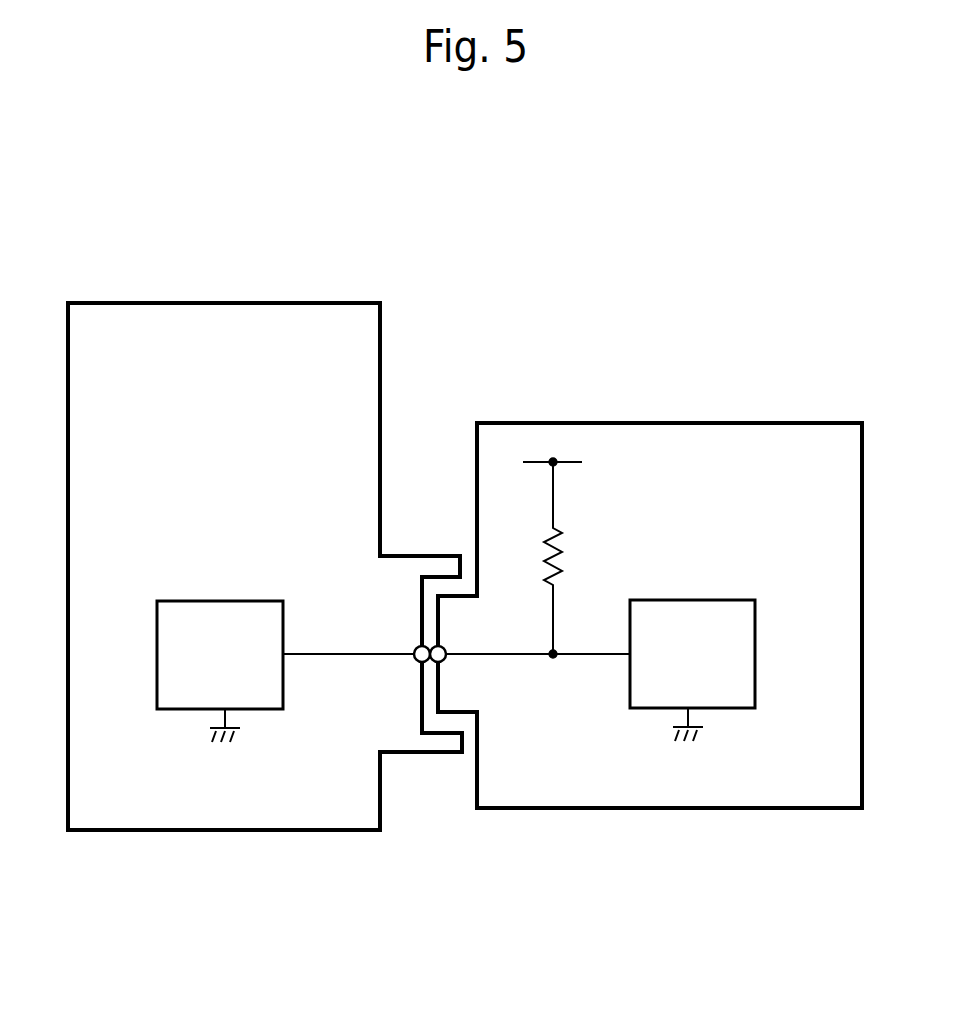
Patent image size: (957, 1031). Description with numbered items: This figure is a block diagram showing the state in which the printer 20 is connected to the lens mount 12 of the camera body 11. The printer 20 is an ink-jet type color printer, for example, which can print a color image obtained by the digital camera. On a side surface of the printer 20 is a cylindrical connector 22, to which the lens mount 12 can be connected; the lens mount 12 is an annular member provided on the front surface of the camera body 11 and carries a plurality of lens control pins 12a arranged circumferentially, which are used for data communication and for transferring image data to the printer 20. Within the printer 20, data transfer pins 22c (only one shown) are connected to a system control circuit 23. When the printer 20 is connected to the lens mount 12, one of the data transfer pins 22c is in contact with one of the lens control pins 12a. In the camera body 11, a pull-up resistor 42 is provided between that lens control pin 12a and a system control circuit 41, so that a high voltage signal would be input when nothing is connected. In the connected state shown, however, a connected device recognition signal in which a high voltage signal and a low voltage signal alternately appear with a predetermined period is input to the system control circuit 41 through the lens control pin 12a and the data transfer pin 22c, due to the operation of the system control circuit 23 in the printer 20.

The printer 20 is at (222, 303).
The cylindrical connector 22 is at (432, 747).
The data transfer pin 22c is at (416, 649).
The system control circuit 23 is at (157, 653).
The camera body 11 is at (670, 809).
The lens mount 12 is at (467, 713).
The lens control pin 12a is at (444, 660).
The system control circuit 41 is at (755, 652).
The pull-up resistor 42 is at (563, 551).